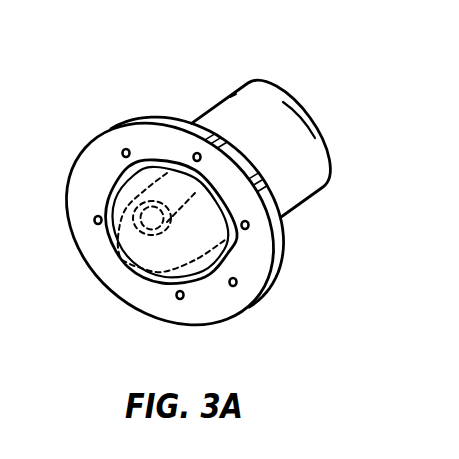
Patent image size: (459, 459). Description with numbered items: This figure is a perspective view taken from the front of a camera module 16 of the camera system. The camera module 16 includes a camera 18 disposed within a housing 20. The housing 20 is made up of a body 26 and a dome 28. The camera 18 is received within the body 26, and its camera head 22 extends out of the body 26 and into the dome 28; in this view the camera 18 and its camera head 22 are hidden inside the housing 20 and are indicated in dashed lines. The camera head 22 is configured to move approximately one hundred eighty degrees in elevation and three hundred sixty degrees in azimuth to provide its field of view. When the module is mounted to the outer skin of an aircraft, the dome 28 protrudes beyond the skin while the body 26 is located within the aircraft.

The camera module 16 is at (320, 46).
The camera 18 is at (155, 272).
The housing 20 is at (148, 104).
The camera head 22 is at (118, 258).
The body 26 is at (307, 200).
The dome 28 is at (109, 195).